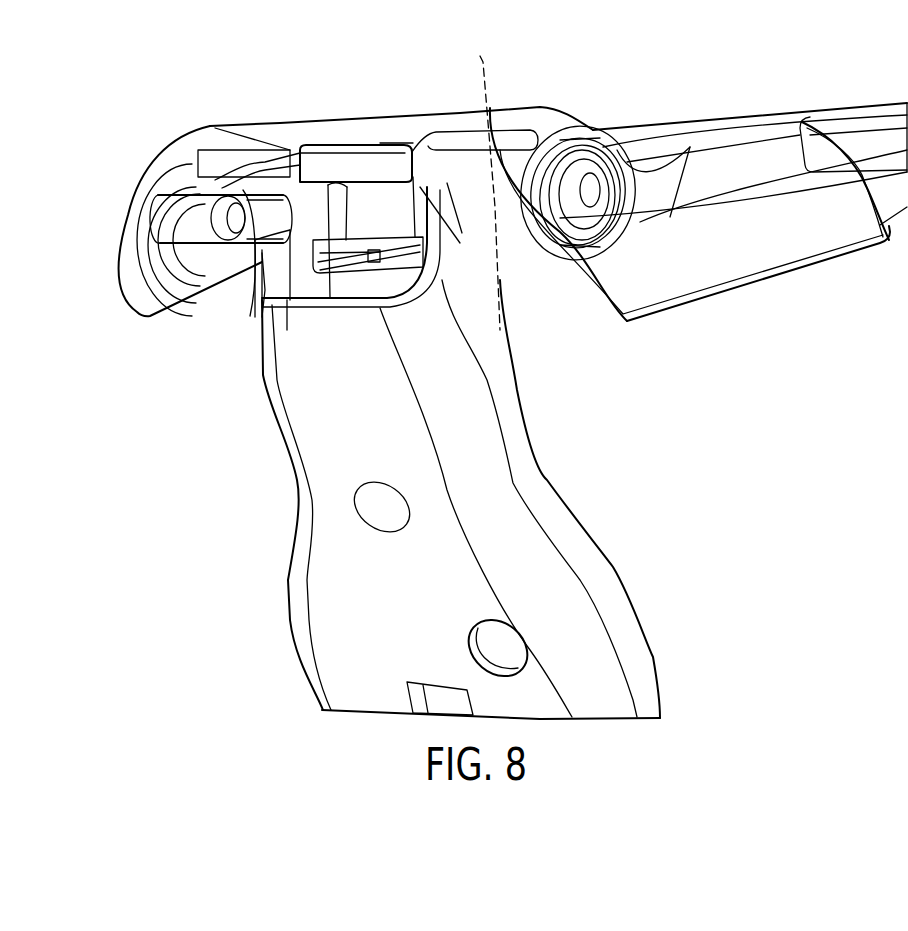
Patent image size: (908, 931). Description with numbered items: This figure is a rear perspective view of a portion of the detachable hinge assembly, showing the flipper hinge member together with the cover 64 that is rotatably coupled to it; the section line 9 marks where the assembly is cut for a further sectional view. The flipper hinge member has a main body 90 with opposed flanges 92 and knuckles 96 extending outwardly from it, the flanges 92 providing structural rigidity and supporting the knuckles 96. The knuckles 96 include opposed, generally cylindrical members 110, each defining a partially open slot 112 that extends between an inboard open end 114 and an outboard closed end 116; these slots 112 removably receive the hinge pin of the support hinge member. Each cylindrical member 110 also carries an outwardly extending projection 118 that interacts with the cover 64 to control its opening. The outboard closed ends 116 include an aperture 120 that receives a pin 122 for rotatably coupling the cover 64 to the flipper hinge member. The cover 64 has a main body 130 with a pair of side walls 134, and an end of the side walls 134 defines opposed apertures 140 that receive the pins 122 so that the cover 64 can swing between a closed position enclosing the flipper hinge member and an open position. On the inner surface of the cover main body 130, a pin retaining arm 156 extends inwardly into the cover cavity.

The section line of FIG. 9 is at (482, 55).
The cover 64 is at (760, 117).
The main body 90 is at (355, 613).
The opposed flanges 92 is at (632, 641).
The knuckles 96 is at (225, 286).
The cylindrical member 110 is at (188, 252).
The partially open slot 112 is at (287, 255).
The inboard open end 114 is at (292, 296).
The outboard closed end 116 is at (268, 237).
The outwardly extending projection 118 is at (517, 130).
The aperture 120 is at (205, 202).
The pin 122 is at (227, 232).
The main body 130 is at (660, 122).
The side walls 134 is at (783, 257).
The opposed apertures 140 is at (560, 157).
The pin retaining arm 156 is at (365, 267).